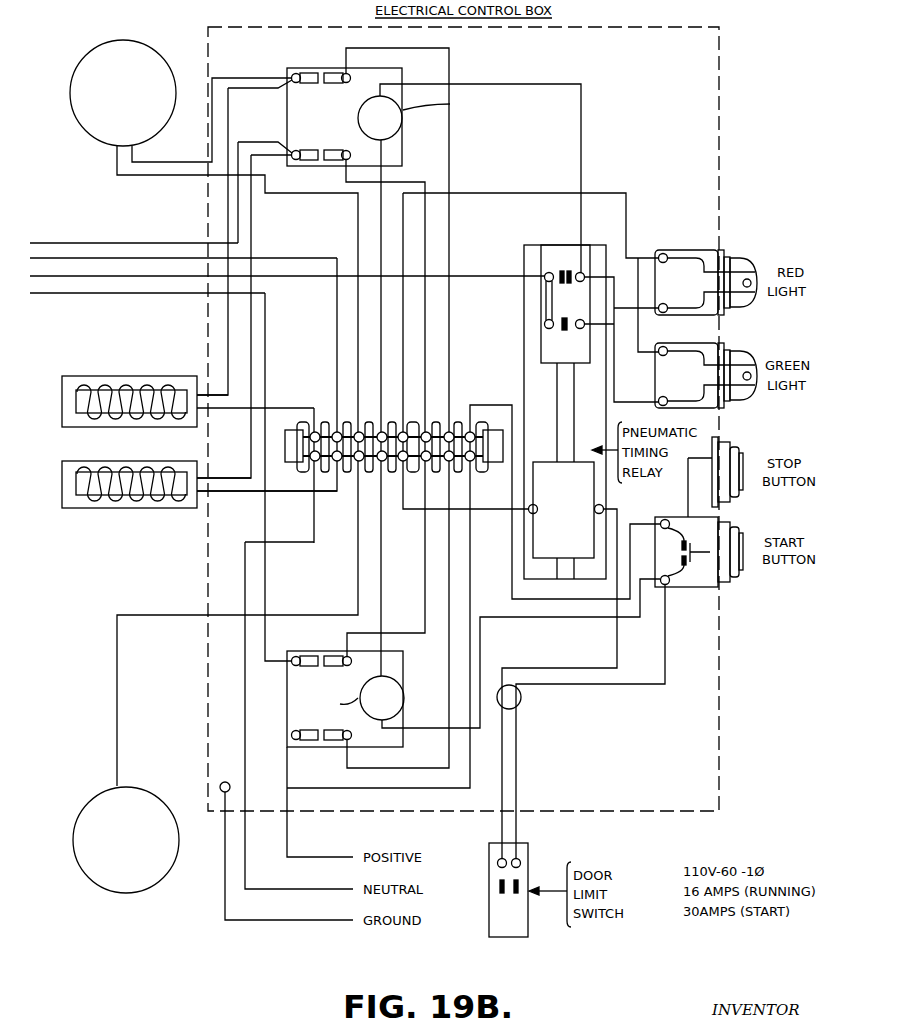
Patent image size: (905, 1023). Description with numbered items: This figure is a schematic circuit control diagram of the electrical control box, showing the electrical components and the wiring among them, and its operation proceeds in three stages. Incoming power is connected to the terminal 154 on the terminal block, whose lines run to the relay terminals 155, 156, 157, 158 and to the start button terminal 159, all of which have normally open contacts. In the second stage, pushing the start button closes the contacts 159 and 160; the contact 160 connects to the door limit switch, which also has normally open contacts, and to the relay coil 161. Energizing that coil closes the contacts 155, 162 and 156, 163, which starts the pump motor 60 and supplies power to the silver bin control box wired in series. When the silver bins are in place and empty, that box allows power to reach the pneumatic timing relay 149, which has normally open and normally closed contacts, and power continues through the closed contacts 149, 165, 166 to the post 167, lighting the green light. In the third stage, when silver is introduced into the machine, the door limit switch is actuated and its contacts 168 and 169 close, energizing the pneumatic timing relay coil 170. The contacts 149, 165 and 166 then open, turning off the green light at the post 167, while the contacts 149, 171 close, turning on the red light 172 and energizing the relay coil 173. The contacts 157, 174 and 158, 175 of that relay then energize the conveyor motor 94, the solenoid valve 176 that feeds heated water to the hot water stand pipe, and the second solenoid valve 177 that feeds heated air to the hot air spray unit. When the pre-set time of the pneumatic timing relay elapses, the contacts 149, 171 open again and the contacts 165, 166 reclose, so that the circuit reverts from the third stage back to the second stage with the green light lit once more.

The conveyor motor 94 is at (88, 53).
The pump motor 60 is at (90, 878).
The relay coil 173 is at (392, 133).
The relay contact 175 is at (295, 83).
The relay terminal 158 is at (348, 83).
The relay contact 174 is at (296, 160).
The relay terminal 157 is at (348, 150).
The solenoid valve 176 is at (160, 390).
The second solenoid valve 177 is at (137, 504).
The terminal 154 is at (471, 462).
The pneumatic timing relay 149 is at (545, 276).
The contact 171 is at (581, 272).
The contact 165 is at (545, 325).
The contact 166 is at (580, 329).
The pneumatic timing relay coil 170 is at (604, 509).
The red light 172 is at (666, 303).
The post 167 is at (665, 397).
The start button terminal 159 is at (668, 518).
The start button contact 160 is at (668, 590).
The relay coil 161 is at (397, 688).
The relay contact 163 is at (292, 667).
The relay terminal 156 is at (348, 666).
The relay contact 162 is at (292, 740).
The relay terminal 155 is at (357, 733).
The door limit switch contact 168 is at (519, 858).
The door limit switch contact 169 is at (497, 864).